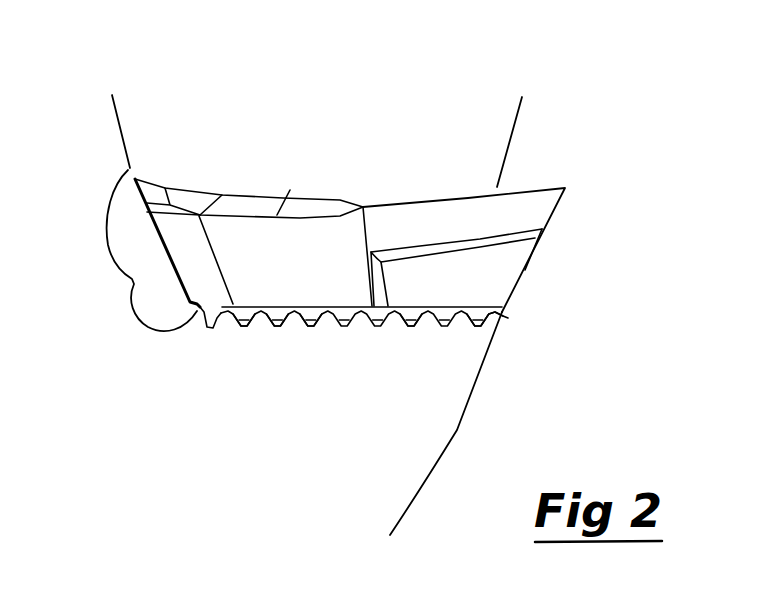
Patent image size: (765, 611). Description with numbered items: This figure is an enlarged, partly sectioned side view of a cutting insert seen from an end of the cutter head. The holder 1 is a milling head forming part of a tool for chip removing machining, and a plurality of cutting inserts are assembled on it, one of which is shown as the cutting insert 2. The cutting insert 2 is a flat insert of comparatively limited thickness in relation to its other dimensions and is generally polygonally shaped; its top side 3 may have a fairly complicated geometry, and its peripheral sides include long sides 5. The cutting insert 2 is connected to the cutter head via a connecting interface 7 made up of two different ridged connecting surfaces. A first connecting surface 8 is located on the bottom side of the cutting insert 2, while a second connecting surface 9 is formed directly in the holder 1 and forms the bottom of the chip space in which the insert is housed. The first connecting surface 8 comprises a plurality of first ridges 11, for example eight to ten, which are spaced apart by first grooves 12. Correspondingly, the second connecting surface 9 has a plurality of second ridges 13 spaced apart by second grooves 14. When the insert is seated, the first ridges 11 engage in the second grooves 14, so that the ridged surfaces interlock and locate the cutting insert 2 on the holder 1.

The holder 1 is at (445, 428).
The cutting insert 2 is at (543, 168).
The top side 3 is at (291, 188).
The long sides 5 is at (152, 240).
The connecting interface 7 is at (512, 317).
The first connecting surface 8 is at (482, 327).
The second connecting surface 9 is at (207, 310).
The first ridges 11 is at (308, 327).
The first grooves 12 is at (258, 305).
The second ridges 13 is at (295, 305).
The second grooves 14 is at (402, 330).